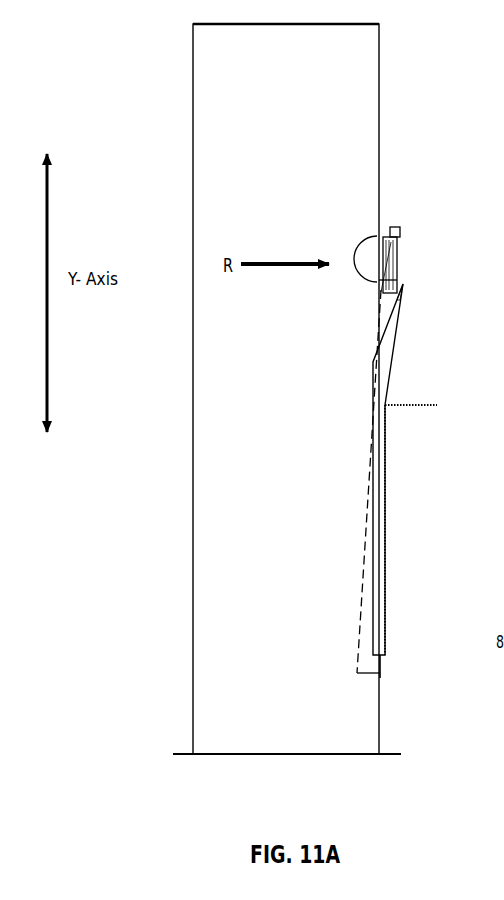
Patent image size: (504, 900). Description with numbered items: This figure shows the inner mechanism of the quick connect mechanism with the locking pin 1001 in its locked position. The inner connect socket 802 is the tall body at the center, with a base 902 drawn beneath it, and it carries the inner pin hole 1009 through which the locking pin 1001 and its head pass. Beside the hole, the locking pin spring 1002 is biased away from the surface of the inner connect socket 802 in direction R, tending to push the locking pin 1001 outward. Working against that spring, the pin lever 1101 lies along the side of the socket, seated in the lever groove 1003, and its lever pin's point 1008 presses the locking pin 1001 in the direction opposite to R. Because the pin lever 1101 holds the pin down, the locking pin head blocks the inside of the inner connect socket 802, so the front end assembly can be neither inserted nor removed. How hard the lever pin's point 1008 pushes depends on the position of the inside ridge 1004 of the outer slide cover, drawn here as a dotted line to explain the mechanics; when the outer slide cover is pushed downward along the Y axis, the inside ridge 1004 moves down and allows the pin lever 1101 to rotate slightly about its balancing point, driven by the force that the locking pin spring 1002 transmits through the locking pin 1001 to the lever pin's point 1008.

The inner connect socket 802 is at (193, 593).
The base surface 902 is at (172, 752).
The locking pin 1001 is at (398, 259).
The locking pin spring 1002 is at (384, 230).
The lever groove 1003 is at (361, 575).
The inside ridge 1004 is at (390, 408).
The lever pin's point 1008 is at (405, 302).
The inner pin hole 1009 is at (356, 242).
The pin lever 1101 is at (385, 508).